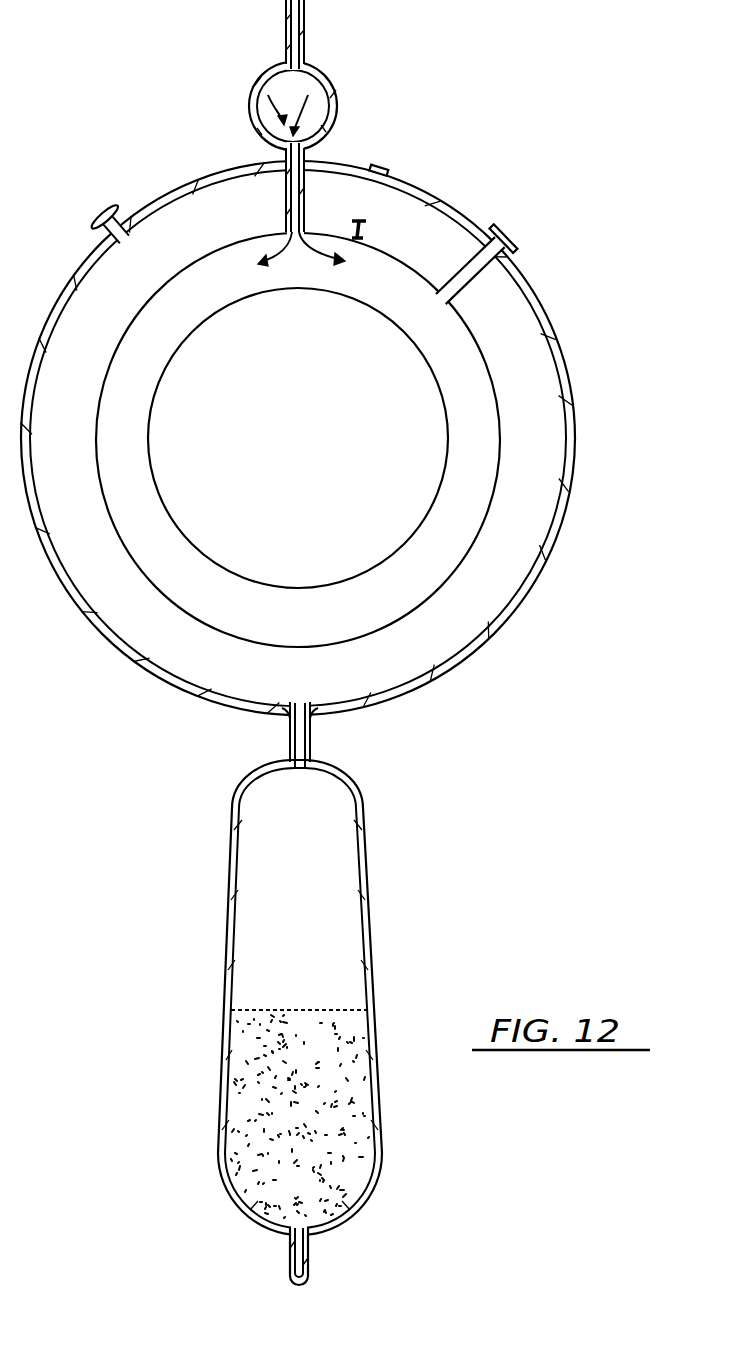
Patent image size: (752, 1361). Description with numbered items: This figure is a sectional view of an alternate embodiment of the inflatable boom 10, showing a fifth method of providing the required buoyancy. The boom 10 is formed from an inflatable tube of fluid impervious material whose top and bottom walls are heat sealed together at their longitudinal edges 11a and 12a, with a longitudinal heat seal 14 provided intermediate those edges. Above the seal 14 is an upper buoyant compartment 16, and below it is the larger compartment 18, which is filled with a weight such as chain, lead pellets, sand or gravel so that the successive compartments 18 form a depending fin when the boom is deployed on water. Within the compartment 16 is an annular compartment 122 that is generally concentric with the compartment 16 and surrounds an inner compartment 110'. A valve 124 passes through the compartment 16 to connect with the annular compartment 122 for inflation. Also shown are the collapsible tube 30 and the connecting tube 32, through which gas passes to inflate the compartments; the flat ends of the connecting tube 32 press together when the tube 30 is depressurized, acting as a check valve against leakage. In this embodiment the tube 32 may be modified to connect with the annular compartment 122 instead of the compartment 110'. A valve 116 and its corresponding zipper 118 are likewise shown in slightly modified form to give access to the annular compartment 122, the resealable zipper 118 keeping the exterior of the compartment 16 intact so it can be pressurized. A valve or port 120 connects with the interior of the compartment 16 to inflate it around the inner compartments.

The boom 10 is at (180, 116).
The longitudinal edge 12a is at (304, 22).
The collapsible tube 30 is at (332, 88).
The connecting tube 32 is at (286, 192).
The zipper 118 is at (384, 164).
The valve or port 120 is at (104, 212).
The valve 116 is at (362, 230).
The valve 124 is at (475, 287).
The compartment 16 is at (70, 431).
The compartment 110' is at (298, 438).
The annular compartment 122 is at (416, 570).
The longitudinal heat seal 14 is at (290, 740).
The compartment 18 is at (310, 876).
The longitudinal edge 11a is at (290, 1252).